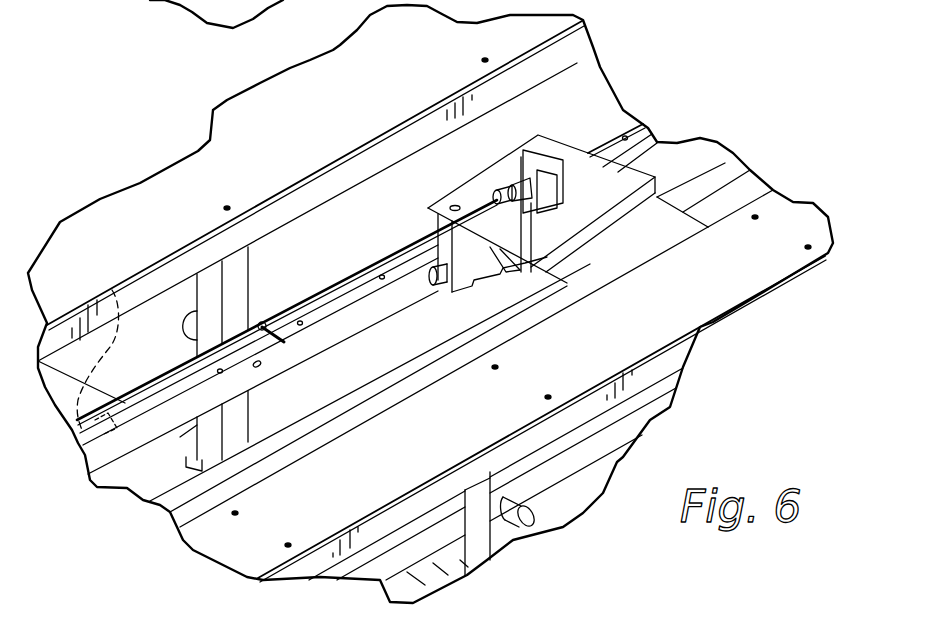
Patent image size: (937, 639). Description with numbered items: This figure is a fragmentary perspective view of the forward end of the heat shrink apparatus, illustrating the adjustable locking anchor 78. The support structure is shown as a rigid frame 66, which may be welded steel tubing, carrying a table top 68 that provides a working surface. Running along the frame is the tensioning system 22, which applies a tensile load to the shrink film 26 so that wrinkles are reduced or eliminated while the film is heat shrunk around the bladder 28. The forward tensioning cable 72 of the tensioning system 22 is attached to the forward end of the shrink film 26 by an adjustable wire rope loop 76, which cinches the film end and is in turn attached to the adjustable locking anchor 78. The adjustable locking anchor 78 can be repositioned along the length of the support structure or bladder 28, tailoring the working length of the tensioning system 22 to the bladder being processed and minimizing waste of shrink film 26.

The tensioning system 22 is at (338, 270).
The shrink film 26 is at (143, 398).
The bladder 28 is at (112, 291).
The rigid frame 66 is at (240, 277).
The table top 68 is at (140, 200).
The forward tensioning cable 72 is at (368, 268).
The wire rope loop 76 is at (276, 343).
The adjustable locking anchor 78 is at (616, 182).